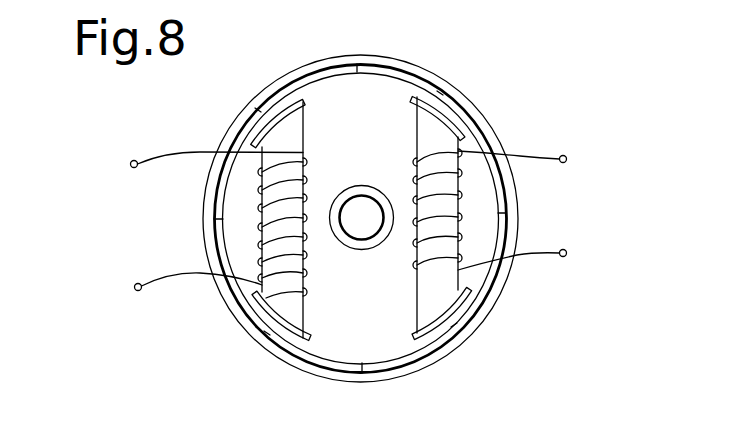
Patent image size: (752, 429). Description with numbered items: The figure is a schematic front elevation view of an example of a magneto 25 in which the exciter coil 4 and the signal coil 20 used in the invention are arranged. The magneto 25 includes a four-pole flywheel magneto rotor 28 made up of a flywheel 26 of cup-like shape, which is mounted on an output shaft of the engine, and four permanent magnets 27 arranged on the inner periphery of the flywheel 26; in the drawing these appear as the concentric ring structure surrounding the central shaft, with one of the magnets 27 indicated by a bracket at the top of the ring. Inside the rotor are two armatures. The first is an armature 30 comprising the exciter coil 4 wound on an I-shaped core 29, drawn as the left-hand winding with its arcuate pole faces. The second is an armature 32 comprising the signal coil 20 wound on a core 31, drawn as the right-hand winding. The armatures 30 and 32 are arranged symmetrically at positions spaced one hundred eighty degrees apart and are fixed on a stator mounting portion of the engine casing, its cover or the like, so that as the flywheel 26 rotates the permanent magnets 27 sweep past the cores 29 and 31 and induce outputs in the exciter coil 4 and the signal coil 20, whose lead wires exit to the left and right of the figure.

The exciter coil 4 is at (303, 153).
The signal coil 20 is at (459, 191).
The magneto 25 is at (509, 86).
The flywheel 26 is at (392, 63).
The permanent magnets 27 is at (372, 73).
The flywheel magneto rotor 28 is at (460, 79).
The I-shaped core 29 is at (288, 307).
The armature 30 is at (245, 233).
The core 31 is at (423, 300).
The armature 32 is at (477, 233).